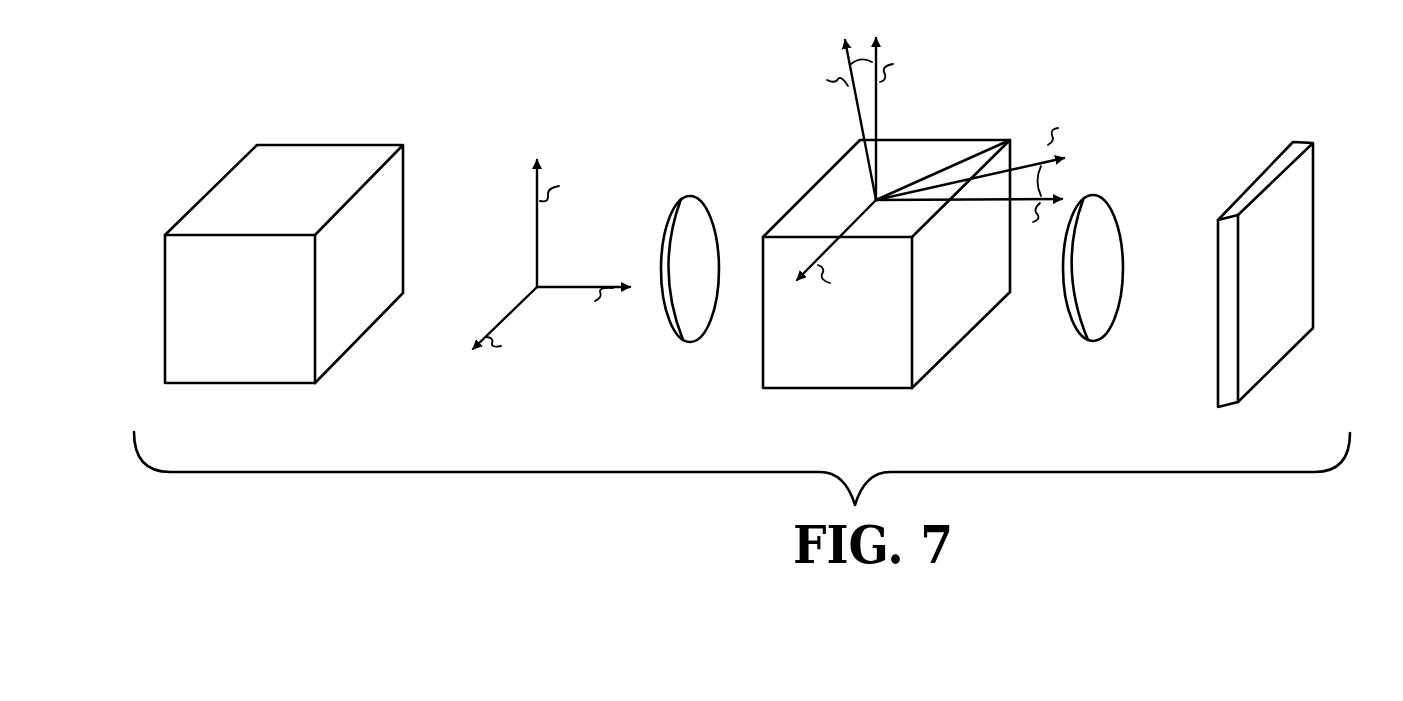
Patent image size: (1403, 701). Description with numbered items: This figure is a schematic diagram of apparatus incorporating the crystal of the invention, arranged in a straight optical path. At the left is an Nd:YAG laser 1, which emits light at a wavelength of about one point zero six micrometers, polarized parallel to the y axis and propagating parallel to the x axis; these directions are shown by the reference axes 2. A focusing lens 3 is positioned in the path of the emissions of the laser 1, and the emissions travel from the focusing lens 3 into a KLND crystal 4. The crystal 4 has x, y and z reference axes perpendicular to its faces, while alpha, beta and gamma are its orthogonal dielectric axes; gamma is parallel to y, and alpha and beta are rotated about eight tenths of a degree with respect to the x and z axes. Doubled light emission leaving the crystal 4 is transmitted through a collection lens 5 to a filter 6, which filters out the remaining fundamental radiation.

The Nd:YAG laser 1 is at (262, 362).
The reference axes 2 is at (565, 290).
The focusing lens 3 is at (697, 316).
The KLND crystal 4 is at (915, 240).
The collection lens 5 is at (1100, 322).
The filter 6 is at (1292, 294).